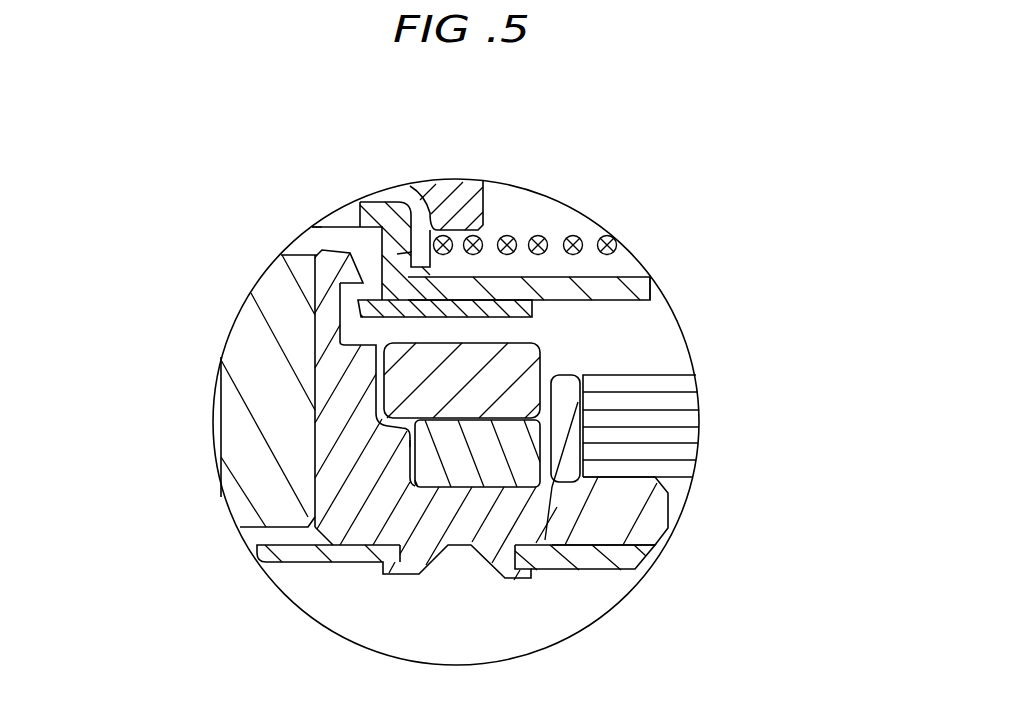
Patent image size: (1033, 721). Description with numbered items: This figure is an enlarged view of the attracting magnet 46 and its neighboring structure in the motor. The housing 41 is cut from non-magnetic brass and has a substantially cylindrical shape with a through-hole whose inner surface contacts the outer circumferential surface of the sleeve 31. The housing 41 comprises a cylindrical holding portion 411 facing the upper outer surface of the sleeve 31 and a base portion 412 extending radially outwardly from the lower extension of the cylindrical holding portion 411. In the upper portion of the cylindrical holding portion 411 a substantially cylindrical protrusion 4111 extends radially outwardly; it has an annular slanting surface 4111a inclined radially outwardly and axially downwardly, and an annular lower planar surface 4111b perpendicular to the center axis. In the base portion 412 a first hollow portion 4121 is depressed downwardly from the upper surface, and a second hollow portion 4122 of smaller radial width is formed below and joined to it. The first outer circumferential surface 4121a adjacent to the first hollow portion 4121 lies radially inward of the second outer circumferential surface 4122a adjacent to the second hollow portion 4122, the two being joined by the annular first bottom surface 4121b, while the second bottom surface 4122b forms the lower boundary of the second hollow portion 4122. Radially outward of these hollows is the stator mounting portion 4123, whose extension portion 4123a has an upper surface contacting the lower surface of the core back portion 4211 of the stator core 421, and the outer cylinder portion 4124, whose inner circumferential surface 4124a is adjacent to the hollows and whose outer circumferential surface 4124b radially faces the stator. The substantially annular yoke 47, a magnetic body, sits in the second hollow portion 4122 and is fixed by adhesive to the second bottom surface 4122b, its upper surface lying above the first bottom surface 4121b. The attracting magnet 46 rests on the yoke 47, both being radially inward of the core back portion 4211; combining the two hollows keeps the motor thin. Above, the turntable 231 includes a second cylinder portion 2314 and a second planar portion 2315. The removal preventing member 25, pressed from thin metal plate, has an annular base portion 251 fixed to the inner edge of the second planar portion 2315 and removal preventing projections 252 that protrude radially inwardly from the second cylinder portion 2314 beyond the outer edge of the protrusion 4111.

The removal preventing member 25 is at (640, 168).
The turntable 231 is at (445, 305).
The second cylinder portion 2314 is at (362, 256).
The second planar portion 2315 is at (600, 283).
The base portion 251 is at (383, 315).
The removal preventing projections 252 is at (553, 264).
The sleeve 31 is at (243, 445).
The housing 41 is at (419, 592).
The cylindrical holding portion 411 is at (360, 200).
The protrusion 4111 is at (411, 247).
The annular slanting surface 4111a is at (331, 242).
The lower planar surface 4111b is at (351, 287).
The base portion 412 is at (339, 493).
The first hollow portion 4121 is at (372, 404).
The first outer circumferential surface 4121a is at (372, 366).
The first bottom surface 4121b is at (412, 430).
The second hollow portion 4122 is at (372, 470).
The second outer circumferential surface 4122a is at (414, 447).
The second bottom surface 4122b is at (510, 472).
The stator mounting portion 4123 is at (620, 480).
The extension portion 4123a is at (602, 475).
The outer cylinder portion 4124 is at (560, 392).
The inner circumferential surface 4124a is at (585, 410).
The outer circumferential surface 4124b is at (582, 437).
The stator core 421 is at (651, 368).
The core back portion 4211 is at (680, 415).
The attracting magnet 46 is at (518, 363).
The yoke 47 is at (488, 470).